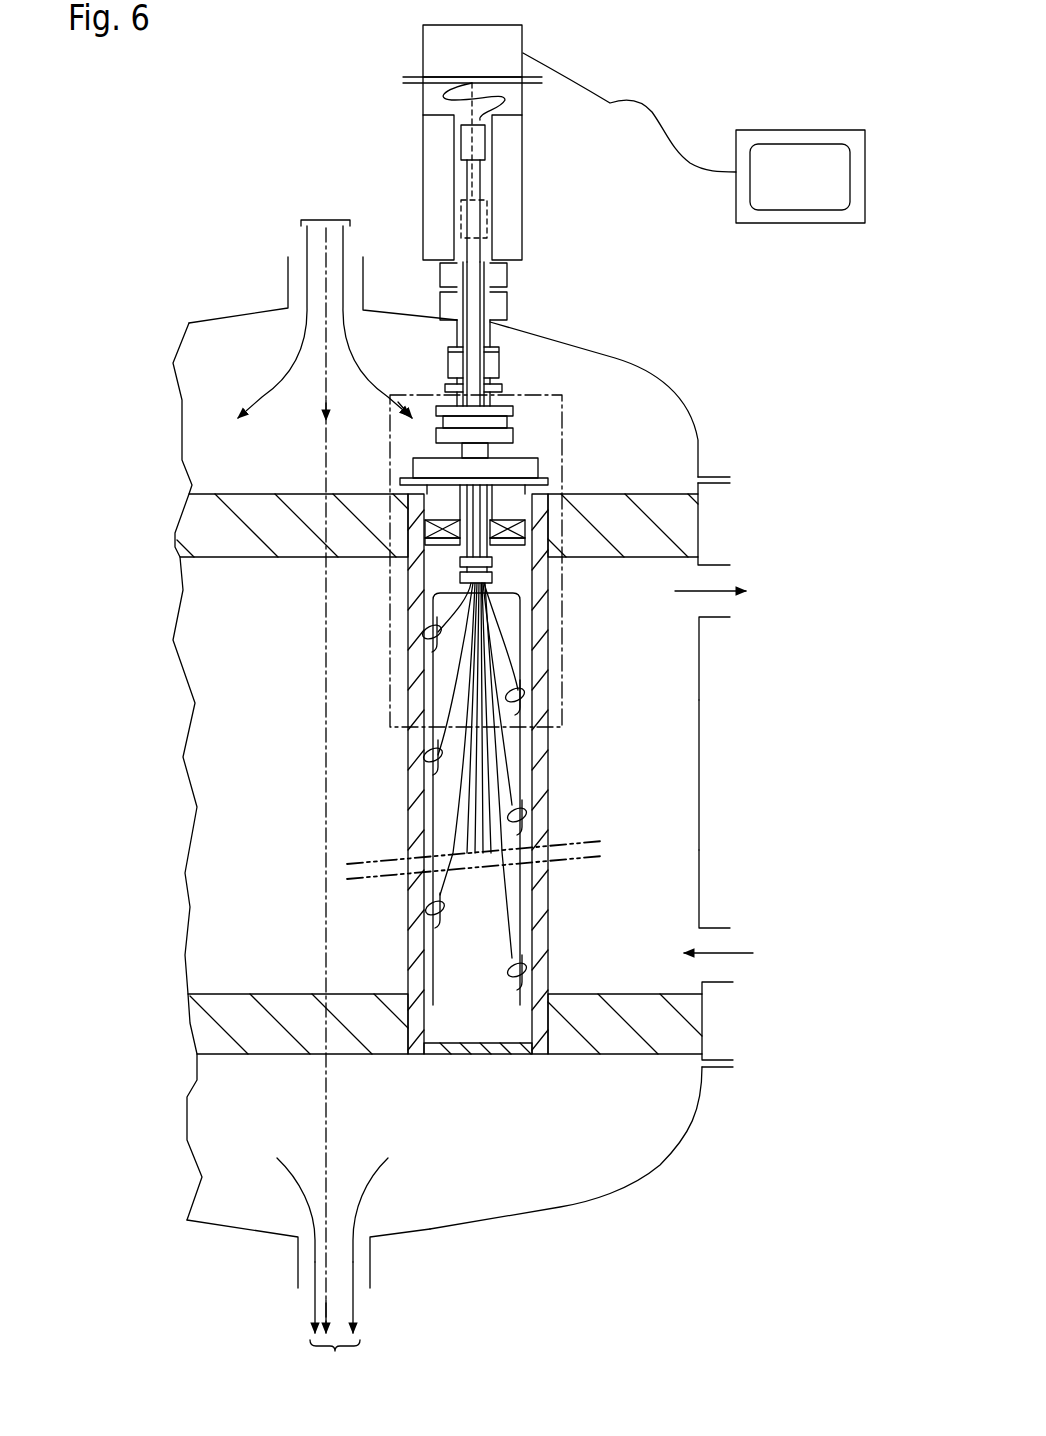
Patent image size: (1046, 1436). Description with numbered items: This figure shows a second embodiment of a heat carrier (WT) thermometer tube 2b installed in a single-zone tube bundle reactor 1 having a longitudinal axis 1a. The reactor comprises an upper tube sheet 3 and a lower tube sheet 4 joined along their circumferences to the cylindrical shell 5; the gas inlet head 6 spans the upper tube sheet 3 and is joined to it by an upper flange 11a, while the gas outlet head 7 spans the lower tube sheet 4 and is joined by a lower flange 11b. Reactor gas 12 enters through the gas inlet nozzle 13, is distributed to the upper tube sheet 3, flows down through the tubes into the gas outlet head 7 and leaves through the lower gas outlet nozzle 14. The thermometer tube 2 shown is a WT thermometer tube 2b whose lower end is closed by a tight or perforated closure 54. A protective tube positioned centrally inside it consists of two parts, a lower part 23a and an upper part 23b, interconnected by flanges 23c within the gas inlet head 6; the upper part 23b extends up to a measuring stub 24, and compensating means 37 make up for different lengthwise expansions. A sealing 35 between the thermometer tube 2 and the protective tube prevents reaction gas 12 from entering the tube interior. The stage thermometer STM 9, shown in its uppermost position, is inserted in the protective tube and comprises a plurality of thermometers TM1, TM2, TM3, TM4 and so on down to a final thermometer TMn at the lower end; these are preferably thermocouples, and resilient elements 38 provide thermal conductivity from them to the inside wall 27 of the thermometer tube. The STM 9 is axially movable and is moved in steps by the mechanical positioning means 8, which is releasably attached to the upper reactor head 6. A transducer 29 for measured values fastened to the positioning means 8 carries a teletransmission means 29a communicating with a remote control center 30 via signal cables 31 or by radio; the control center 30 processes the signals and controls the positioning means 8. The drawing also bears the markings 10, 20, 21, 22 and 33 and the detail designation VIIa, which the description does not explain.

The tube bundle reactor 1 is at (168, 222).
The longitudinal axis 1a is at (326, 476).
The thermometer tube 2 is at (519, 860).
The WT thermometer tube 2b is at (610, 867).
The upper tube sheet 3 is at (197, 522).
The lower tube sheet 4 is at (200, 1030).
The shell 5 is at (737, 772).
The gas inlet head 6 is at (640, 372).
The gas outlet head 7 is at (595, 1190).
The mechanical positioning means 8 is at (495, 143).
The stage thermometer (STM) 9 is at (514, 589).
The gas flow 10 is at (720, 588).
The upper flange 11a is at (712, 477).
The lower flange 11b is at (722, 1068).
The reactor gas 12 is at (324, 220).
The gas inlet nozzle 13 is at (288, 290).
The lower gas outlet nozzle 14 is at (370, 1265).
The lower connection 20 is at (722, 928).
The measuring tube 21 is at (654, 910).
The upper connection 22 is at (713, 617).
The lower part of the protective tube 23a is at (502, 390).
The upper part of the protective tube 23b is at (450, 380).
The flanges 23c is at (499, 378).
The measuring stub 24 is at (503, 312).
The inside wall 27 is at (430, 575).
The transducer 29 is at (538, 51).
The teletransmission means 29a is at (508, 36).
The control center 30 is at (800, 130).
The signal cables 31 is at (633, 100).
The flange bracket 33 is at (500, 283).
The sealing 35 is at (507, 500).
The compensating means 37 is at (448, 352).
The resilient elements 38 is at (440, 773).
The perforated closure 54 is at (460, 1056).
The first thermometer TM1 is at (428, 632).
The second thermometer TM2 is at (522, 693).
The third thermometer TM3 is at (367, 687).
The fourth thermometer TM4 is at (524, 815).
The last thermometer TMn is at (524, 967).
The detail section VIIa is at (563, 632).